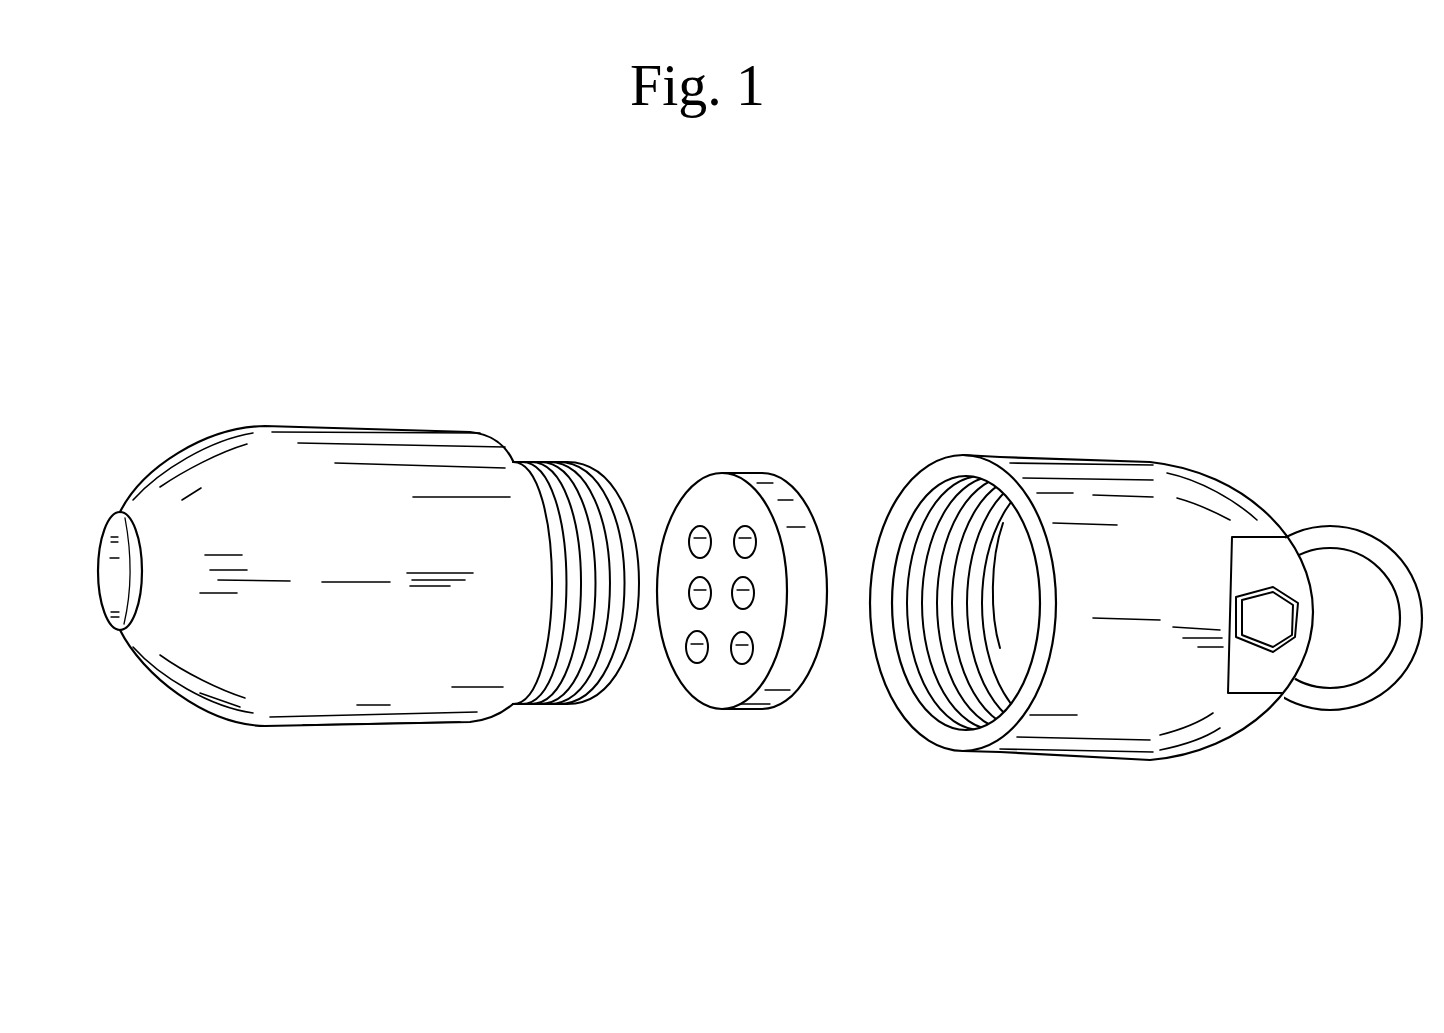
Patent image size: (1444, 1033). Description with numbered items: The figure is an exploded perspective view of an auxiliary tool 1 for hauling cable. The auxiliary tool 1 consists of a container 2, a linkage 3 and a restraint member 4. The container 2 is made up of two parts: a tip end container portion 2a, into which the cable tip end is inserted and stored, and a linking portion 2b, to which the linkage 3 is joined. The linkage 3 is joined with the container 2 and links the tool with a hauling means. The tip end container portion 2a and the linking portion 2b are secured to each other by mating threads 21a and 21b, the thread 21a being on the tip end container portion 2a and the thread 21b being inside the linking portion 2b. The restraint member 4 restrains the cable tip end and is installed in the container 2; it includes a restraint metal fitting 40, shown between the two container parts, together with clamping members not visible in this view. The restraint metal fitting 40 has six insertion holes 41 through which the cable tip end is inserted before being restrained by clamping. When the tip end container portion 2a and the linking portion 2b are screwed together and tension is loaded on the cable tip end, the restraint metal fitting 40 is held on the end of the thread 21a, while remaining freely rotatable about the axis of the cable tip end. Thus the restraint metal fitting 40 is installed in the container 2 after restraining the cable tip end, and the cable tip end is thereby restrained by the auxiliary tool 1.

The auxiliary tool for hauling cable 1 is at (527, 369).
The container 2 is at (883, 345).
The tip end container portion 2a is at (500, 452).
The linking portion 2b is at (942, 466).
The thread 21a is at (550, 713).
The thread 21b is at (955, 713).
The linkage 3 is at (1382, 553).
The restraint member 4 is at (765, 478).
The restraint metal fitting 40 is at (703, 690).
The insertion holes 41 is at (693, 545).